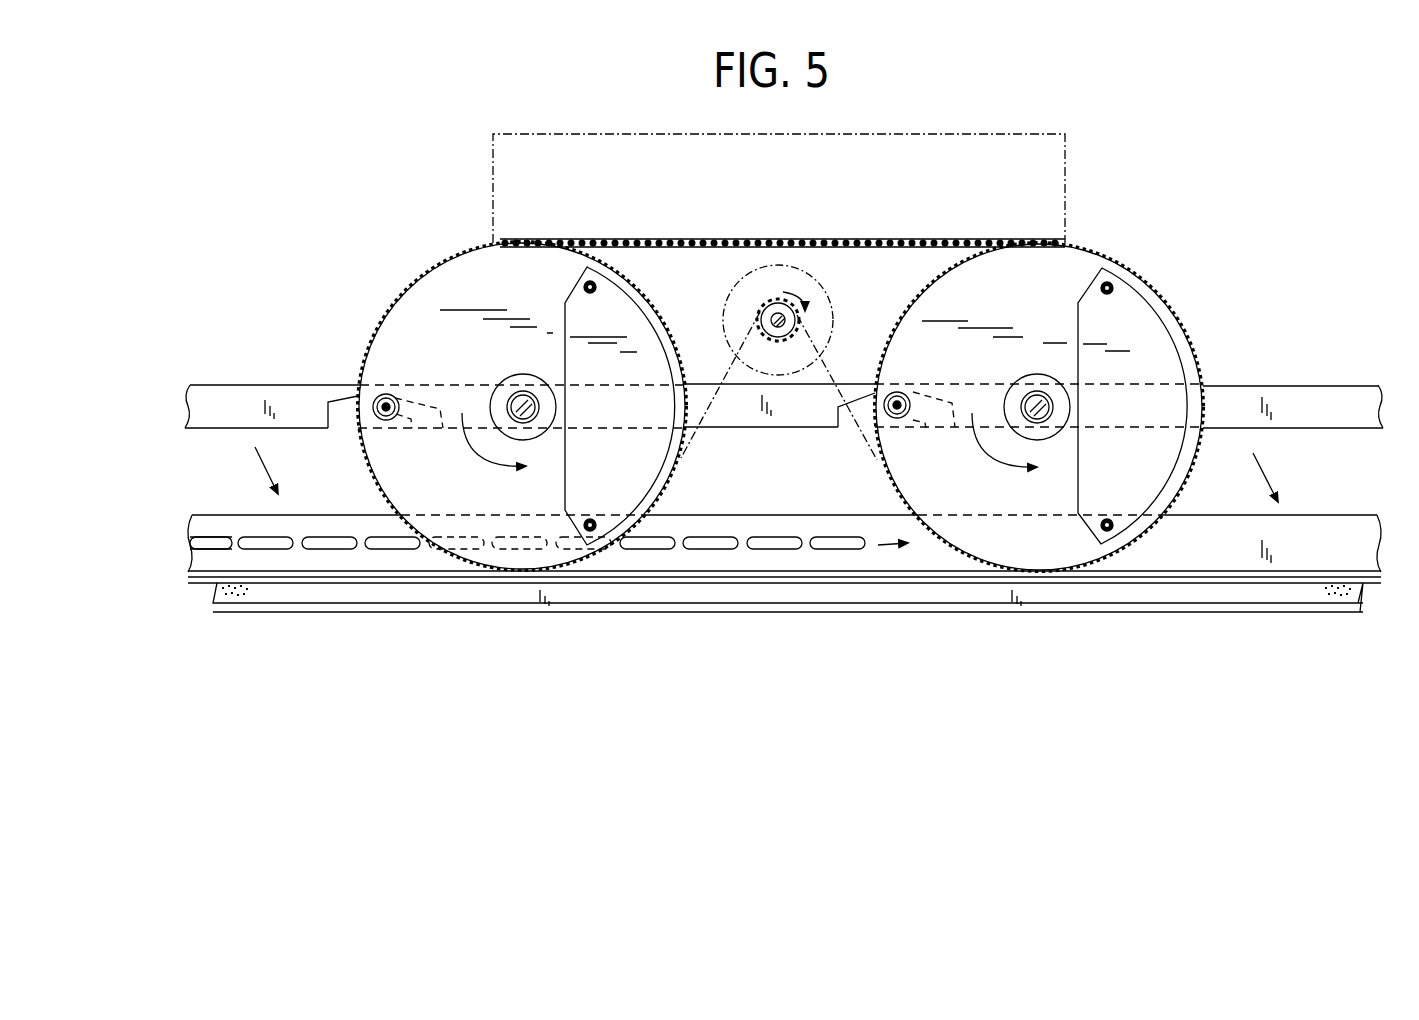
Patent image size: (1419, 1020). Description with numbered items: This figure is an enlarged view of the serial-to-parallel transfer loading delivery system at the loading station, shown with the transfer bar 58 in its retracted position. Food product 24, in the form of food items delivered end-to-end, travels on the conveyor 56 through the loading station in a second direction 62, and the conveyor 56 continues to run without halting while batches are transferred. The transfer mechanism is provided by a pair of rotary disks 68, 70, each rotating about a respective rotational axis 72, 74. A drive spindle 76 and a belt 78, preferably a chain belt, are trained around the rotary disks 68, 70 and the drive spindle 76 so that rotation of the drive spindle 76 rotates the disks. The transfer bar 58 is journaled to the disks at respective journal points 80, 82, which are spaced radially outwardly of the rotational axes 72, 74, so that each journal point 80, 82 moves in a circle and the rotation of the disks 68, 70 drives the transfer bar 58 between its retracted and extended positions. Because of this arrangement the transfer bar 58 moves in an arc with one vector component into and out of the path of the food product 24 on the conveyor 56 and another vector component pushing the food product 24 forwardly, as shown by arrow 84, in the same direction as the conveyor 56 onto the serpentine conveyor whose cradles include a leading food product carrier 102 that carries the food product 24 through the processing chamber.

The food product 24 is at (207, 551).
The conveyor 56 is at (248, 523).
The transfer bar 58 is at (282, 398).
The second direction 62 is at (878, 545).
The rotary disk 68 is at (1072, 268).
The rotary disk 70 is at (437, 290).
The rotational axis 72 is at (1035, 400).
The rotational axis 74 is at (522, 400).
The drive spindle 76 is at (765, 308).
The belt 78 is at (868, 243).
The journal point 80 is at (900, 400).
The journal point 82 is at (392, 400).
The arrow 84 is at (267, 471).
The leading food product carrier 102 is at (216, 600).